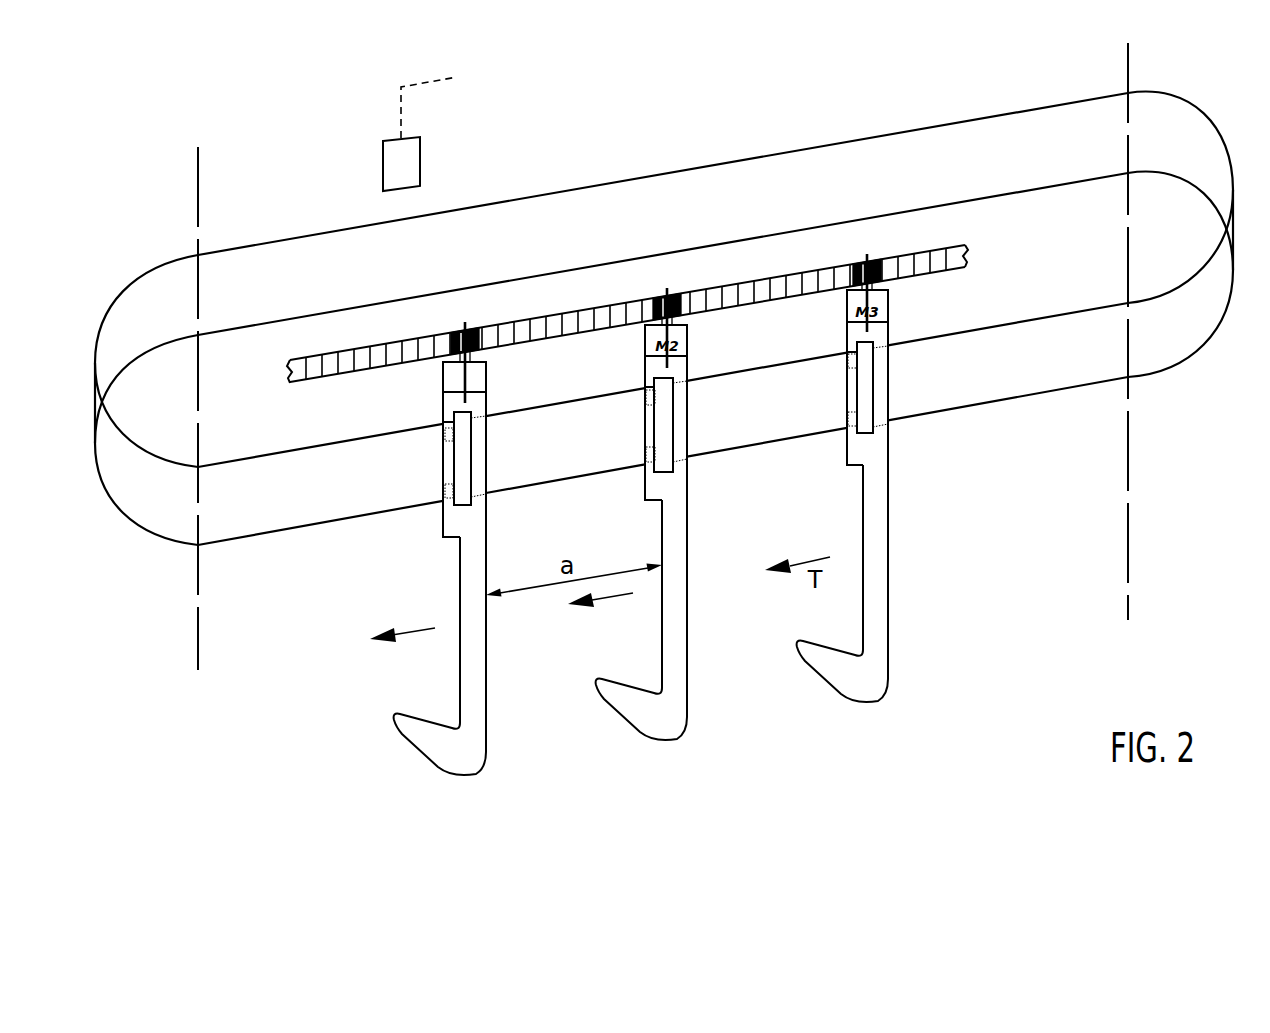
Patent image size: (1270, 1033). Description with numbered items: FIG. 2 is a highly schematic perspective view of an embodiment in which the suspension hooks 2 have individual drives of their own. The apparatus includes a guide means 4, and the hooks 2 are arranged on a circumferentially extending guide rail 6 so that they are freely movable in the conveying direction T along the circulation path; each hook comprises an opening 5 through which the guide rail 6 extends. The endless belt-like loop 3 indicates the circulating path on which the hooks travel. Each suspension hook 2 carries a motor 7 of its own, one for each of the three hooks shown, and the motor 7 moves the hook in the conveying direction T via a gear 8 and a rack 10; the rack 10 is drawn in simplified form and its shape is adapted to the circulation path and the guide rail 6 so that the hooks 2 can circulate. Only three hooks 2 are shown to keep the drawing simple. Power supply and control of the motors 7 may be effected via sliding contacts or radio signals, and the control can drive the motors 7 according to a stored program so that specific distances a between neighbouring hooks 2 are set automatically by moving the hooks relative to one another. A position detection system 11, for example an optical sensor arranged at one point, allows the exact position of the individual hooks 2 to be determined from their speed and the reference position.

The suspension hook 2 is at (487, 765).
The conveyor belt 3 is at (1221, 128).
The guide means 4 is at (431, 519).
The opening 5 is at (873, 433).
The guide rail 6 is at (1040, 338).
The motor 7 is at (487, 375).
The gear 8 is at (690, 292).
The rack 10 is at (959, 264).
The position detection system 11 is at (383, 173).